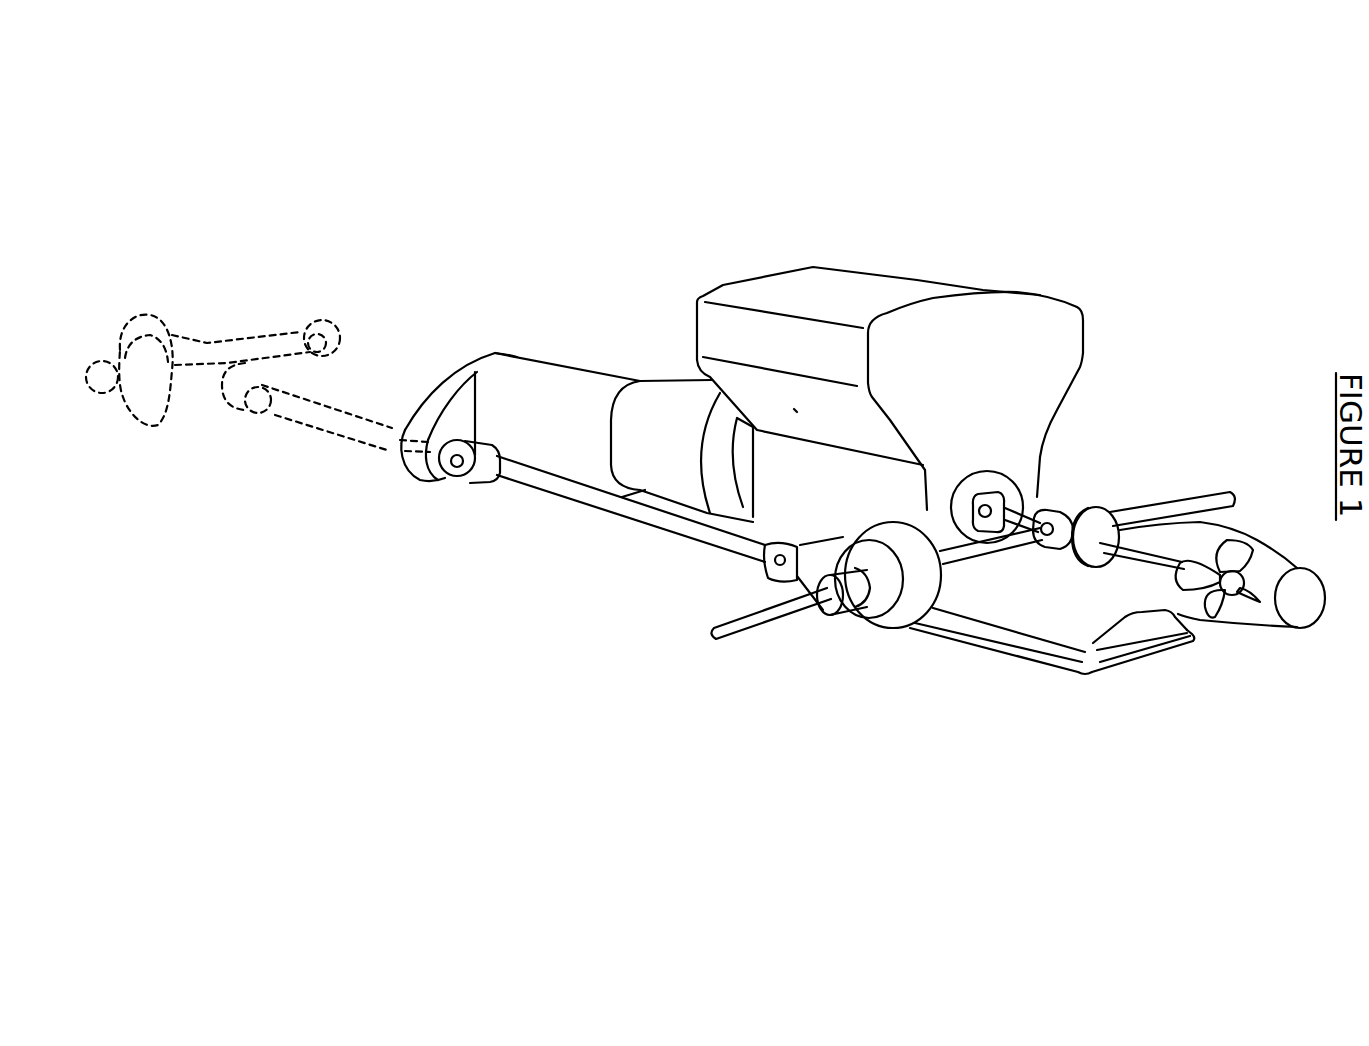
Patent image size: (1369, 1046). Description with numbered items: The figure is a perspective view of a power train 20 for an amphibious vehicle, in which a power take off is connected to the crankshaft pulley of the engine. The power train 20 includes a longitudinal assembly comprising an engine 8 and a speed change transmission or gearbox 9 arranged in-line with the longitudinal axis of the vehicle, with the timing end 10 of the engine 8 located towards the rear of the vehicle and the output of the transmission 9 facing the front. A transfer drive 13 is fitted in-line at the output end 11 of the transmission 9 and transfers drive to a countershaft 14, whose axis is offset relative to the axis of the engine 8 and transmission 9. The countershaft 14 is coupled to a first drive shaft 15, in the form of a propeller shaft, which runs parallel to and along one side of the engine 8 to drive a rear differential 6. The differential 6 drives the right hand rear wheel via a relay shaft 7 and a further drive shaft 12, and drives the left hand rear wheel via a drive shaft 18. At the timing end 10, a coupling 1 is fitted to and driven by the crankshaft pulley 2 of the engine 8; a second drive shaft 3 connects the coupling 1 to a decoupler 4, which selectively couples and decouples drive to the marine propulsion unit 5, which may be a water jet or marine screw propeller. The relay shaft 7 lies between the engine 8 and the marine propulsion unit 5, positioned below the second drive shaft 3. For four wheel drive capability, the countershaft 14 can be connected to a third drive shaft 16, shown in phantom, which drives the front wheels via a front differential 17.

The coupling 1 is at (1006, 493).
The crankshaft pulley 2 is at (976, 490).
The second drive shaft 3 is at (1027, 502).
The decoupler 4 is at (1089, 523).
The marine propulsion unit 5 is at (1053, 616).
The rear differential 6 is at (879, 583).
The relay shaft 7 is at (995, 552).
The engine 8 is at (797, 428).
The transmission 9 is at (538, 443).
The timing end 10 is at (903, 391).
The output end 11 is at (517, 356).
The further drive shaft 12 is at (1172, 507).
The transfer drive 13 is at (458, 383).
The countershaft 14 is at (417, 445).
The first drive shaft 15 is at (606, 500).
The third drive shaft 16 is at (316, 415).
The front differential 17 is at (180, 340).
The drive shaft 18 is at (735, 632).
The power train 20 is at (635, 211).